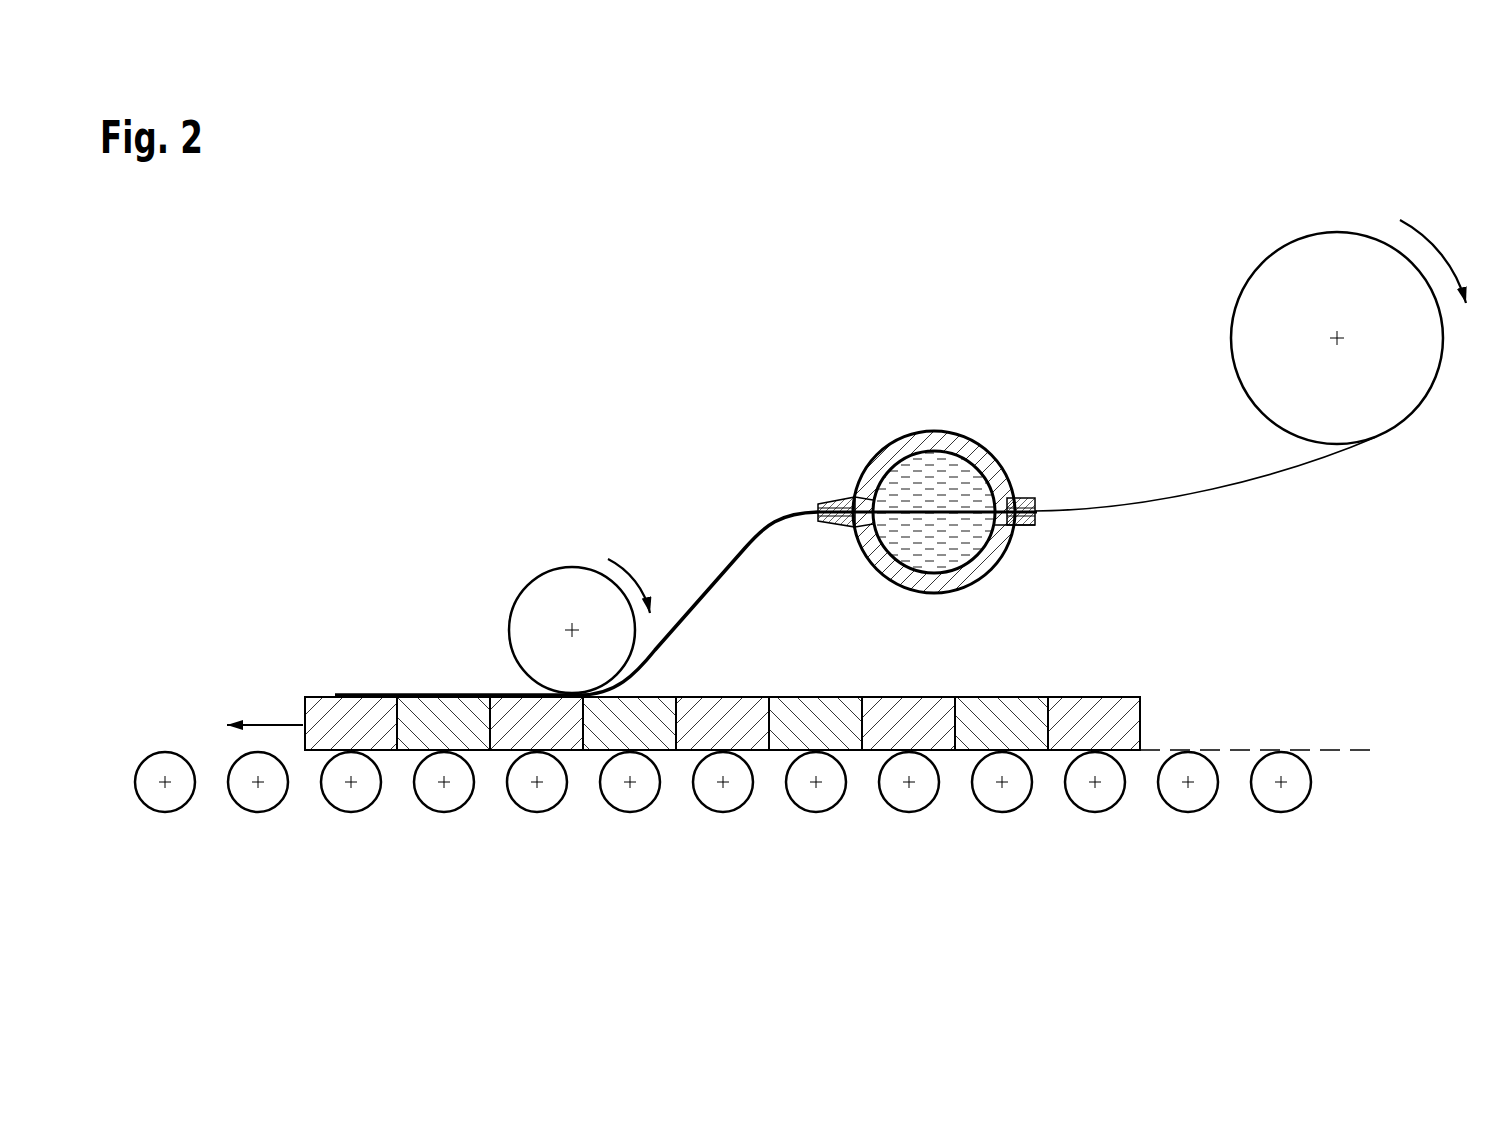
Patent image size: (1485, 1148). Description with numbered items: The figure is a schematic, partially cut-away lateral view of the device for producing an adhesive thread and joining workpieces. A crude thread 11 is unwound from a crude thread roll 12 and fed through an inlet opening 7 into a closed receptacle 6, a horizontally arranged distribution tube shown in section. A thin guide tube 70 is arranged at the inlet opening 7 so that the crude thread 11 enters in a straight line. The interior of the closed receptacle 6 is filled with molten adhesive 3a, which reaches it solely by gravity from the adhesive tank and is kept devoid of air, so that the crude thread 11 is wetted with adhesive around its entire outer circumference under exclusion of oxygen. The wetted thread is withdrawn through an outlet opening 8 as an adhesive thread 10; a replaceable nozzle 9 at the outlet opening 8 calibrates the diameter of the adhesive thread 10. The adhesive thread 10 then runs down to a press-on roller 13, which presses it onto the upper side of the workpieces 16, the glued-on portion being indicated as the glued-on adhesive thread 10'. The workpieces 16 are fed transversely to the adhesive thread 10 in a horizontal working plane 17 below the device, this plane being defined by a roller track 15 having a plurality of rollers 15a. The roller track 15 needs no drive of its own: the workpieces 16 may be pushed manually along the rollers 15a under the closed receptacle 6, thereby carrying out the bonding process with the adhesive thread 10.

The molten adhesive 3a is at (920, 478).
The closed receptacle 6 is at (975, 442).
The inlet opening 7 is at (1008, 502).
The guide tube 70 is at (1018, 527).
The outlet opening 8 is at (858, 498).
The nozzle 9 is at (818, 502).
The adhesive thread 10 is at (699, 588).
The glued-on adhesive thread 10' is at (458, 651).
The crude thread 11 is at (1240, 497).
The crude thread roll 12 is at (1325, 232).
The press-on roller 13 is at (572, 567).
The roller track 15 is at (778, 819).
The rollers 15a is at (165, 813).
The workpieces 16 is at (350, 716).
The working plane 17 is at (1240, 750).